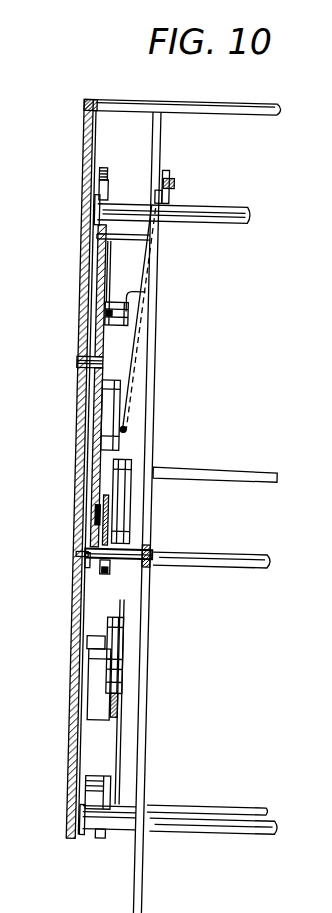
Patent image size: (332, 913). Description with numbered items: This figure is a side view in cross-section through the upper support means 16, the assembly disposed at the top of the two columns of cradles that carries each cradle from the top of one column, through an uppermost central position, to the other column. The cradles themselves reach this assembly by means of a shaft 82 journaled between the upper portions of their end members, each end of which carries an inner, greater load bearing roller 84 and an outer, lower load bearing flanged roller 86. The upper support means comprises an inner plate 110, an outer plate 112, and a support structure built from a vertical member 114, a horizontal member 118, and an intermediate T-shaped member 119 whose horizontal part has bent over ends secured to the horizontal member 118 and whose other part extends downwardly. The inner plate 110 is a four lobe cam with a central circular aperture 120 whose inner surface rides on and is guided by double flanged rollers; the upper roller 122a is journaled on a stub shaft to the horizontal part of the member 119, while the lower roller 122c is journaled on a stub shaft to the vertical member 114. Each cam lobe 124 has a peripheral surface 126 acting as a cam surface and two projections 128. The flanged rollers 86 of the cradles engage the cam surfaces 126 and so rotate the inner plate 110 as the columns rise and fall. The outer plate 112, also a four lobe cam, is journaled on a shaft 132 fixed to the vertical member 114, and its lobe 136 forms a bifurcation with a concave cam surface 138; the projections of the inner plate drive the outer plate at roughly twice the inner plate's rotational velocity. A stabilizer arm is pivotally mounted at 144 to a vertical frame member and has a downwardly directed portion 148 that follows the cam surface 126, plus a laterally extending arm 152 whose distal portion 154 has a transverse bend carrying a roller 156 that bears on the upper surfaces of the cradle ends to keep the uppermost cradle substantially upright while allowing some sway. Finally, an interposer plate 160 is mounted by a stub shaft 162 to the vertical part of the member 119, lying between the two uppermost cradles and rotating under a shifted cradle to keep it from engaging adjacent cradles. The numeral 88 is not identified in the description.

The upper support means 16 is at (70, 144).
The shaft 82 is at (212, 212).
The roller 84 is at (151, 232).
The roller 86 is at (110, 196).
The flange 88 is at (99, 197).
The inner plate 110 is at (133, 704).
The outer plate 112 is at (103, 266).
The vertical member 114 is at (86, 465).
The horizontal member 118 is at (112, 512).
The T-shaped member 119 is at (140, 540).
The central circular aperture 120 is at (133, 431).
The upper roller 122a is at (140, 500).
The lower roller 122c is at (137, 671).
The cam lobe 124 is at (137, 766).
The peripheral surface 126 is at (132, 292).
The projection 128 is at (118, 316).
The shaft 132 is at (103, 359).
The lobe 136 is at (115, 206).
The concave cam surface 138 is at (104, 529).
The pivot 144 is at (96, 241).
The downwardly directed portion 148 is at (150, 320).
The laterally extending arm 152 is at (168, 173).
The distal portion 154 is at (177, 178).
The roller 156 is at (152, 200).
The interposer plate 160 is at (163, 568).
The stub shaft 162 is at (87, 557).